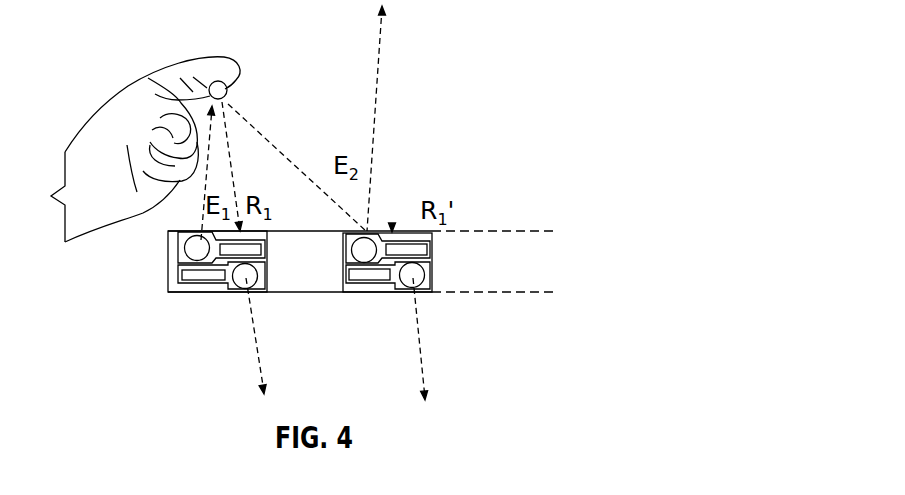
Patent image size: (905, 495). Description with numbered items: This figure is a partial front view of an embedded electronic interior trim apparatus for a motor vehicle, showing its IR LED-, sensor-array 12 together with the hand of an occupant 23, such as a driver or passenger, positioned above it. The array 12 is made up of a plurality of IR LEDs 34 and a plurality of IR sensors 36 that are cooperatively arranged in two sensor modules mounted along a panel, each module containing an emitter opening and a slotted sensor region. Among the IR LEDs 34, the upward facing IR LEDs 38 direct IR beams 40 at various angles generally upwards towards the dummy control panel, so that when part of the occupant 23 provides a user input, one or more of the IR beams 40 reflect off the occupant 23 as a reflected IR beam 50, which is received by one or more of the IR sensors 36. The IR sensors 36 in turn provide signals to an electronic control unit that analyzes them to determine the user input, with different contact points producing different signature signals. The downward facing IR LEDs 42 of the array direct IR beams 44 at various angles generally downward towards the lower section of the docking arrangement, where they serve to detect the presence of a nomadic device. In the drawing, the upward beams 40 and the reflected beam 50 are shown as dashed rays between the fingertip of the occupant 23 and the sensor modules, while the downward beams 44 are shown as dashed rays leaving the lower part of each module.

The IR LED-, sensor-array 12 is at (516, 199).
The occupant 23 is at (108, 132).
The IR LEDs 34 is at (168, 262).
The IR sensors 36 is at (263, 243).
The upward facing IR LEDs 38 is at (176, 248).
The IR beams 40 is at (383, 44).
The downward facing IR LEDs 42 is at (252, 288).
The IR beams 44 is at (260, 378).
The reflected IR beam 50 is at (226, 116).